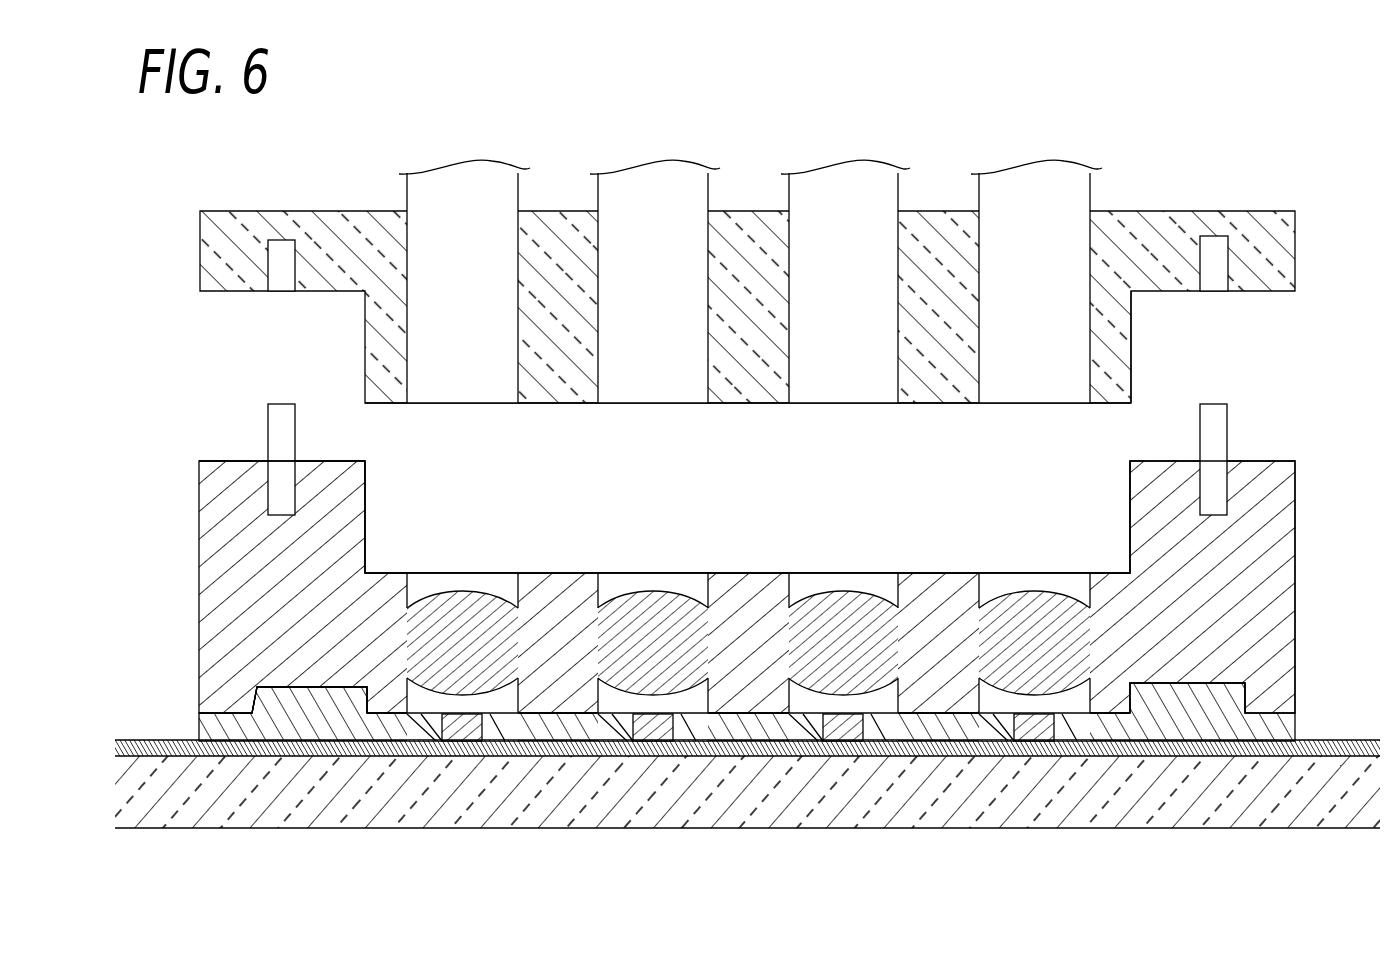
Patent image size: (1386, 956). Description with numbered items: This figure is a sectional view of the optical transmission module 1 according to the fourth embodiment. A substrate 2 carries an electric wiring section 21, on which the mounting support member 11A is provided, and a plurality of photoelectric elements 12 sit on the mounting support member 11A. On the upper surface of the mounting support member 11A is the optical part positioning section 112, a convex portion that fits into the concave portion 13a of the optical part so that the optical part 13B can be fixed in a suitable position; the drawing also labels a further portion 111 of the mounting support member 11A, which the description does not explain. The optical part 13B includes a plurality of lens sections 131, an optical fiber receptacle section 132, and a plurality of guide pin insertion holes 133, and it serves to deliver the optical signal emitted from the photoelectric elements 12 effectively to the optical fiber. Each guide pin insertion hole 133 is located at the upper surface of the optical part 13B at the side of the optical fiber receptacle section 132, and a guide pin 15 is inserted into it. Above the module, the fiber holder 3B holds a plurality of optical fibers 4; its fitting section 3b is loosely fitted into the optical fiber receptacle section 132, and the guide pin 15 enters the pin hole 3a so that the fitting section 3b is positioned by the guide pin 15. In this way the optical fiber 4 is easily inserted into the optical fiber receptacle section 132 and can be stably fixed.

The optical transmission module 1 is at (1148, 437).
The substrate 2 is at (1060, 800).
The pin hole 3a is at (283, 277).
The fiber holder 3B is at (380, 211).
The fitting section 3b is at (1133, 358).
The optical fiber 4 is at (1046, 262).
The mounting support member 11A is at (1125, 733).
The photoelectric element 12 is at (852, 748).
The concave portion 13a is at (273, 687).
The optical part 13B is at (1268, 528).
The guide pin 15 is at (268, 418).
The electric wiring section 21 is at (718, 752).
The contact portion 111 is at (512, 745).
The optical part positioning section 112 is at (320, 714).
The lens section 131 is at (463, 590).
The optical fiber receptacle section 132 is at (805, 515).
The guide pin insertion hole 133 is at (263, 478).